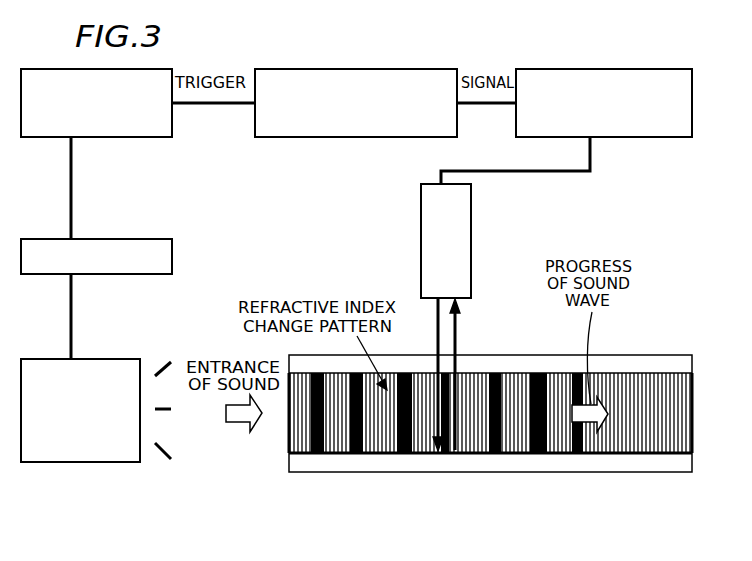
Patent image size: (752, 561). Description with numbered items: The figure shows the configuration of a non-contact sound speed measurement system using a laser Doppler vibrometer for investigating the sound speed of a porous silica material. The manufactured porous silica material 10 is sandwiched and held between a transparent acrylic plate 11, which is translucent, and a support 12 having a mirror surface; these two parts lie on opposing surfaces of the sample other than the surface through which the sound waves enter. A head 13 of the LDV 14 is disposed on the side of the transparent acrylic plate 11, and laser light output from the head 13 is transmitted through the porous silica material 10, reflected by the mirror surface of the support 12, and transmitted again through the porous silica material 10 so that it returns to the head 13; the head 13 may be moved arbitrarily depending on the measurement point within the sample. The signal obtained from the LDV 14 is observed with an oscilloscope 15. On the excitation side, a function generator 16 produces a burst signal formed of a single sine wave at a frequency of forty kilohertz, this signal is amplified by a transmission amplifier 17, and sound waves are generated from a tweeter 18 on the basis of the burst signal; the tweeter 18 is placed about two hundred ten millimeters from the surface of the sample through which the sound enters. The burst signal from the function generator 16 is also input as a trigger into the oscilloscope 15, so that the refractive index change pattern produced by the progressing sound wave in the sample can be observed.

The porous silica material 10 is at (657, 432).
The transparent acrylic plate 11 is at (613, 353).
The support 12 is at (360, 470).
The head 13 is at (446, 317).
The LDV 14 is at (604, 103).
The oscilloscope 15 is at (356, 103).
The function generator 16 is at (96, 103).
The transmission amplifier 17 is at (96, 256).
The tweeter 18 is at (96, 410).